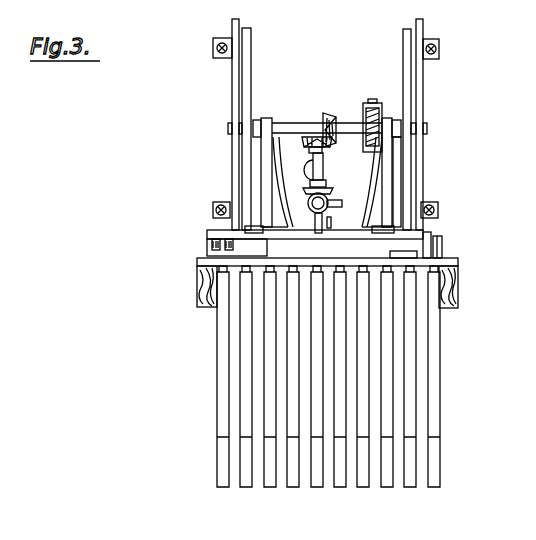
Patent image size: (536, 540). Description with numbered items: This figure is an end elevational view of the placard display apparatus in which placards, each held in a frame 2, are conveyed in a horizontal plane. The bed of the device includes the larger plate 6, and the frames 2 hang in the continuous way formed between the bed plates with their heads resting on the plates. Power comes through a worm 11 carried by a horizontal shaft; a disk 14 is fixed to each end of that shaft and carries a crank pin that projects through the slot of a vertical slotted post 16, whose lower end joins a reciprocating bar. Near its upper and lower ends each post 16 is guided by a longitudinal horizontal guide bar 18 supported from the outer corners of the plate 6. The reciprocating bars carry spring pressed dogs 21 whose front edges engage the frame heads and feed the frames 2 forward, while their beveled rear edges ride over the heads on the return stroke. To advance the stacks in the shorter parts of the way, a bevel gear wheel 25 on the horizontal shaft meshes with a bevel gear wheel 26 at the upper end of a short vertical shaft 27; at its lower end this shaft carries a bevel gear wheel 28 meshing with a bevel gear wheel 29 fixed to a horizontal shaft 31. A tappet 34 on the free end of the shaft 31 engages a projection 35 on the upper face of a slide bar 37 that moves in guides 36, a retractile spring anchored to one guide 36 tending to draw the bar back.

The frame 2 is at (257, 374).
The plate 6 is at (457, 263).
The worm 11 is at (372, 103).
The disk 14 is at (250, 72).
The slotted post 16 is at (238, 88).
The guide bar 18 is at (214, 56).
The dog 21 is at (440, 236).
The bevel gear wheel 25 is at (332, 118).
The bevel gear wheel 26 is at (316, 135).
The vertical shaft 27 is at (324, 166).
The bevel gear wheel 28 is at (331, 191).
The bevel gear wheel 29 is at (310, 205).
The shaft 31 is at (207, 272).
The tappet 34 is at (343, 204).
The projection 35 is at (332, 225).
The guide 36 is at (248, 229).
The slide bar 37 is at (398, 212).